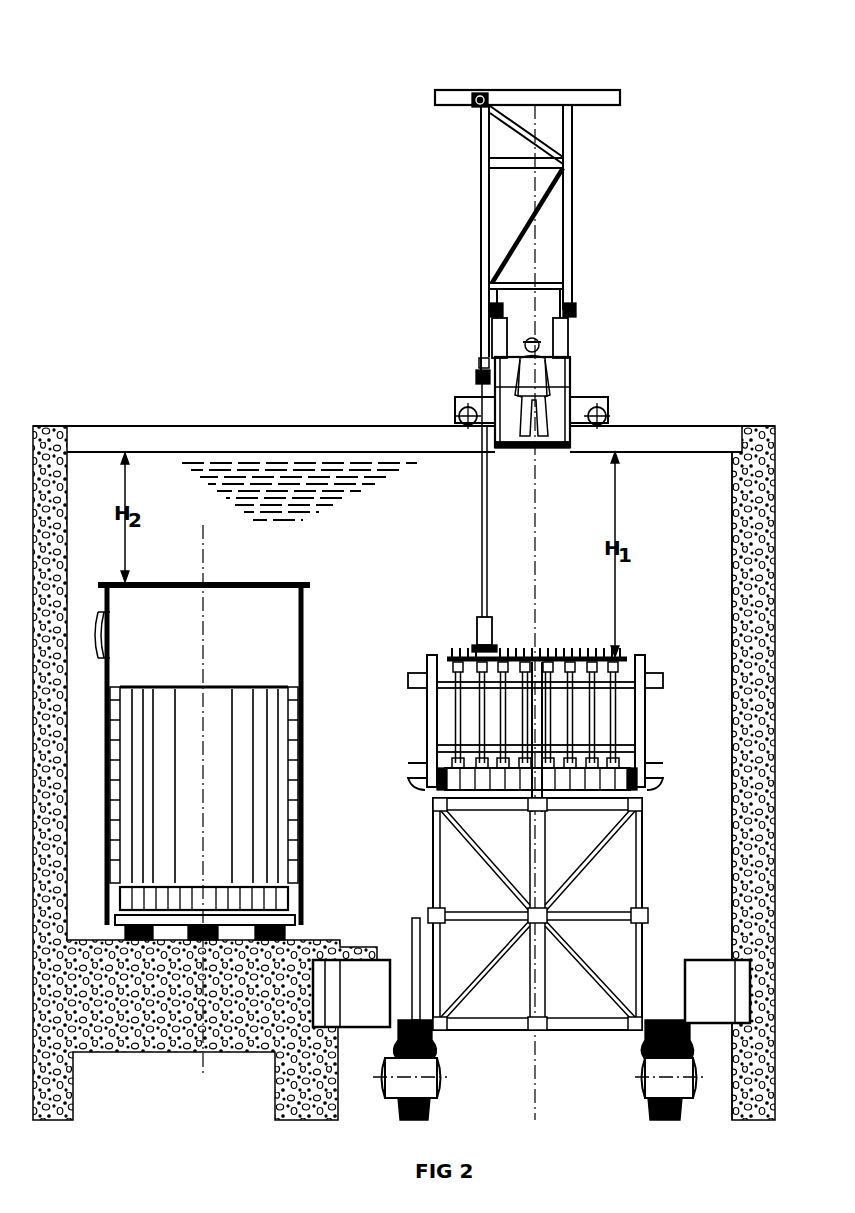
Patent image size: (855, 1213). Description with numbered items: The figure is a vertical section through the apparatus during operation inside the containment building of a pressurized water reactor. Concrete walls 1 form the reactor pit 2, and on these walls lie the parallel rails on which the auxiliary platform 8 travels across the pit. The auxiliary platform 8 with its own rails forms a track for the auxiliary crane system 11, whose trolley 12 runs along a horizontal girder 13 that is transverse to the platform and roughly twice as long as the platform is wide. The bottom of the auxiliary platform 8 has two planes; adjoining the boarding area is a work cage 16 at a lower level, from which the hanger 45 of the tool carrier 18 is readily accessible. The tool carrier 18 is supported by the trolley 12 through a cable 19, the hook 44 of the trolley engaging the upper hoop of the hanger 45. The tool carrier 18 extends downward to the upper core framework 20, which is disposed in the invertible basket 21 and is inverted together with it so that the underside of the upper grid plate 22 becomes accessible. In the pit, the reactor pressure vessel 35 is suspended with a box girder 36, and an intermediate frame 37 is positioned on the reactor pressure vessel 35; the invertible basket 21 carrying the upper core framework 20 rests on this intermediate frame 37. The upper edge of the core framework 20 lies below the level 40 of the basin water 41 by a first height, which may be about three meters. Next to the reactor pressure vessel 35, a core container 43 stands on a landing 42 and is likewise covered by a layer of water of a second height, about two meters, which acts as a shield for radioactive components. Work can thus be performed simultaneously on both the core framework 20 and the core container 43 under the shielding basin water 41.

The concrete walls 1 is at (752, 566).
The reactor pit 2 is at (718, 650).
The auxiliary platform 8 is at (562, 312).
The auxiliary crane system 11 is at (608, 218).
The trolley 12 is at (476, 104).
The cross beam 13 is at (592, 102).
The work cage 16 is at (553, 449).
The tool carrier 18 is at (488, 541).
The cable 19 is at (479, 198).
The upper core framework 20 is at (620, 720).
The invertible basket 21 is at (433, 726).
The upper grid plate 22 is at (622, 657).
The reactor pressure vessel 35 is at (678, 1108).
The box girder 36 is at (740, 990).
The intermediate frame 37 is at (433, 850).
The level of basin water 40 is at (683, 450).
The basin water 41 is at (406, 569).
The landing 42 is at (343, 940).
The core container 43 is at (305, 645).
The hook 44 is at (484, 360).
The hanger 45 is at (478, 377).